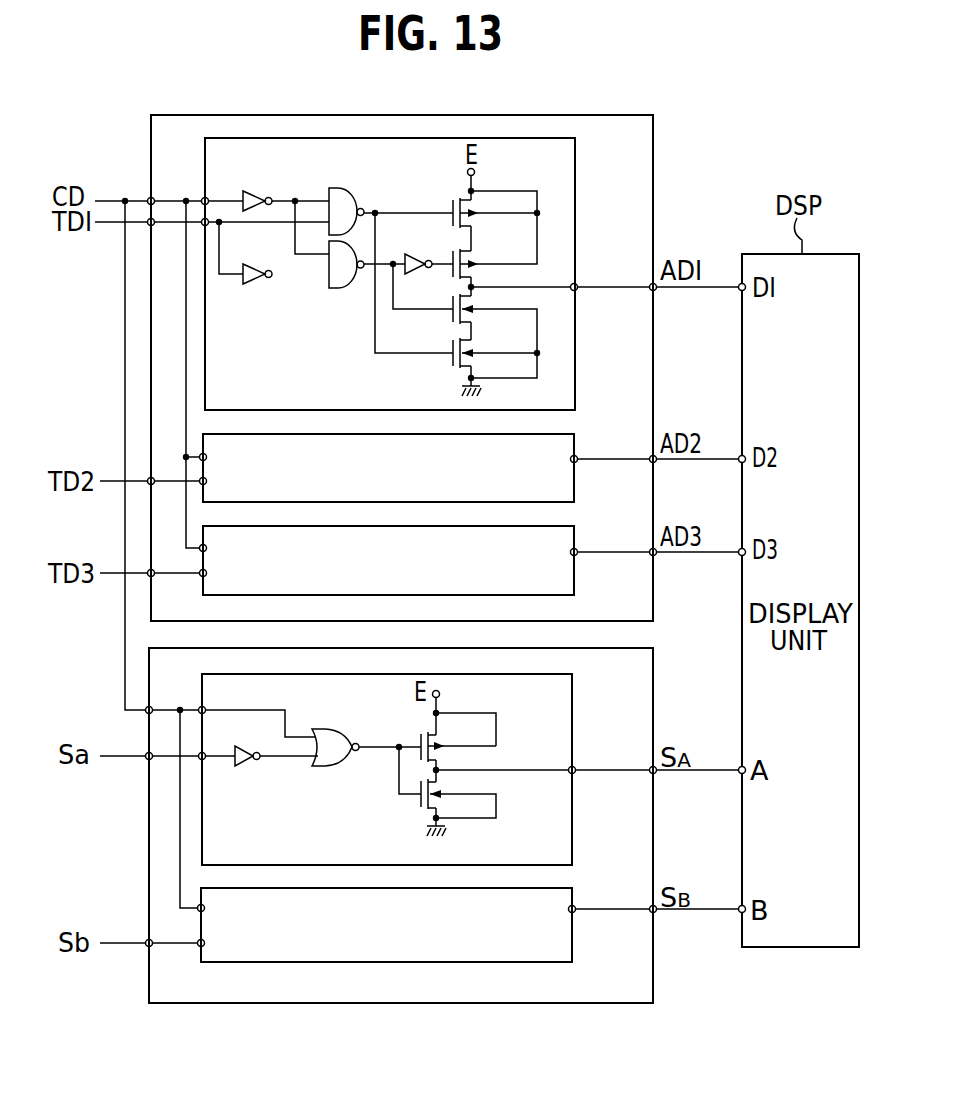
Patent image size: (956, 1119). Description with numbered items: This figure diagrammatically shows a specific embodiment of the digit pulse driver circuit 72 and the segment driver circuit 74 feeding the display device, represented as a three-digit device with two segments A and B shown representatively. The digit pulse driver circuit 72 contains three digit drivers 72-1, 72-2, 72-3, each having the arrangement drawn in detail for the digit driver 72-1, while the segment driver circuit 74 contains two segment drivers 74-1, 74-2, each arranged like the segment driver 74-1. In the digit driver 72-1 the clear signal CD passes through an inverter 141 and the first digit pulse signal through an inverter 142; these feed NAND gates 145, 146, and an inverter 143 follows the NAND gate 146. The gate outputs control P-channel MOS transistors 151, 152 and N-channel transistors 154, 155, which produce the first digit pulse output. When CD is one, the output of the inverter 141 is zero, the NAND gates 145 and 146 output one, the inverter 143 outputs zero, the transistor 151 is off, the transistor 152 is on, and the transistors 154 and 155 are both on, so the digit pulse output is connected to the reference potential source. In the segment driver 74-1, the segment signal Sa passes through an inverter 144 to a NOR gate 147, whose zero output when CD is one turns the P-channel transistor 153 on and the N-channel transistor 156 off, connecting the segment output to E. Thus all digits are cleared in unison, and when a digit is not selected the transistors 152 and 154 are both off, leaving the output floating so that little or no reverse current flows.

The digit pulse driver circuit 72 is at (653, 188).
The digit driver 72-1 is at (575, 172).
The digit driver 72-2 is at (577, 437).
The digit driver 72-3 is at (577, 529).
The segment driver circuit 74 is at (653, 700).
The segment driver 74-1 is at (572, 700).
The segment driver 74-2 is at (576, 892).
The inverter 141 is at (256, 191).
The inverter 142 is at (249, 286).
The inverter 143 is at (423, 254).
The inverter 144 is at (243, 766).
The NAND gate 145 is at (343, 189).
The NAND gate 146 is at (337, 289).
The NOR gate 147 is at (336, 729).
The P-channel MOS transistor 151 is at (457, 197).
The P-channel MOS transistor 152 is at (472, 251).
The P-channel transistor 153 is at (427, 733).
The N-channel transistor 154 is at (456, 295).
The N-channel transistor 155 is at (473, 346).
The N-channel transistor 156 is at (424, 805).